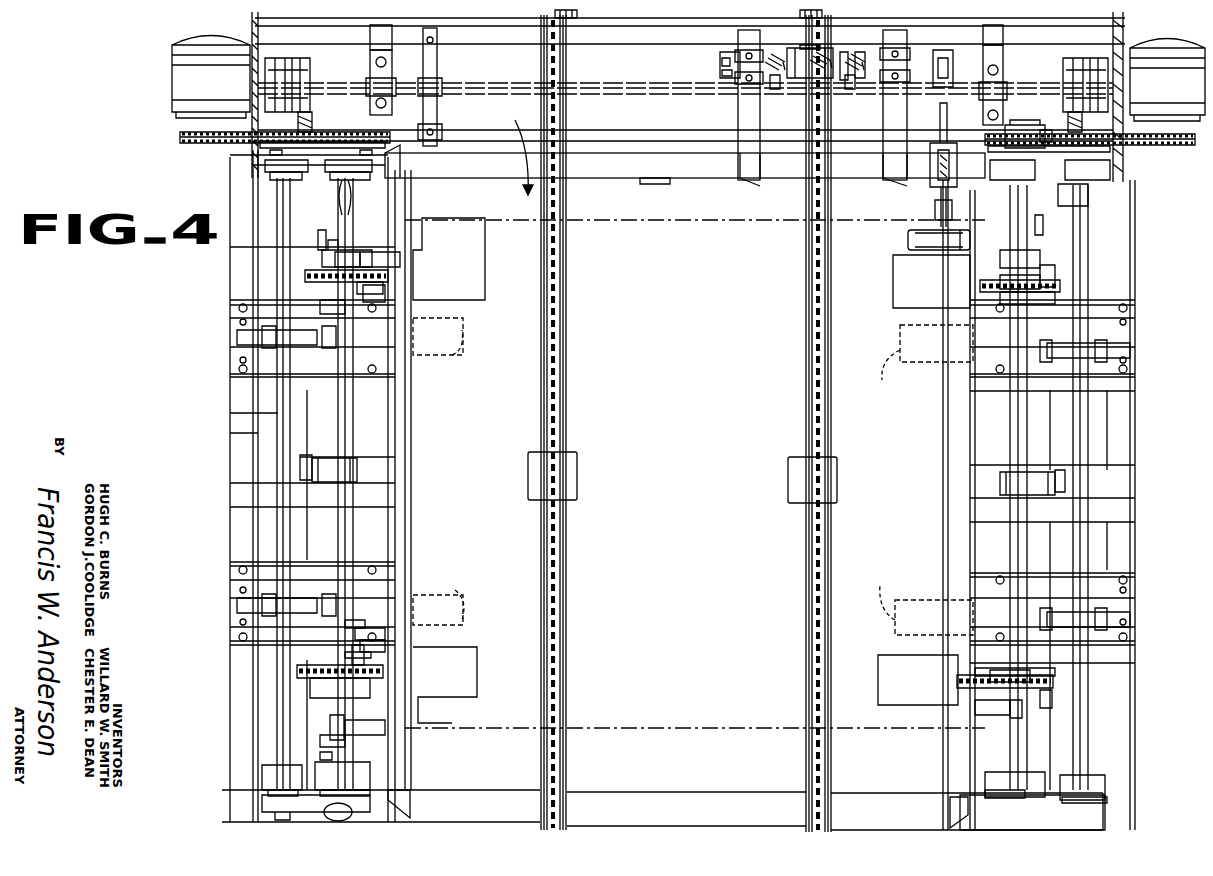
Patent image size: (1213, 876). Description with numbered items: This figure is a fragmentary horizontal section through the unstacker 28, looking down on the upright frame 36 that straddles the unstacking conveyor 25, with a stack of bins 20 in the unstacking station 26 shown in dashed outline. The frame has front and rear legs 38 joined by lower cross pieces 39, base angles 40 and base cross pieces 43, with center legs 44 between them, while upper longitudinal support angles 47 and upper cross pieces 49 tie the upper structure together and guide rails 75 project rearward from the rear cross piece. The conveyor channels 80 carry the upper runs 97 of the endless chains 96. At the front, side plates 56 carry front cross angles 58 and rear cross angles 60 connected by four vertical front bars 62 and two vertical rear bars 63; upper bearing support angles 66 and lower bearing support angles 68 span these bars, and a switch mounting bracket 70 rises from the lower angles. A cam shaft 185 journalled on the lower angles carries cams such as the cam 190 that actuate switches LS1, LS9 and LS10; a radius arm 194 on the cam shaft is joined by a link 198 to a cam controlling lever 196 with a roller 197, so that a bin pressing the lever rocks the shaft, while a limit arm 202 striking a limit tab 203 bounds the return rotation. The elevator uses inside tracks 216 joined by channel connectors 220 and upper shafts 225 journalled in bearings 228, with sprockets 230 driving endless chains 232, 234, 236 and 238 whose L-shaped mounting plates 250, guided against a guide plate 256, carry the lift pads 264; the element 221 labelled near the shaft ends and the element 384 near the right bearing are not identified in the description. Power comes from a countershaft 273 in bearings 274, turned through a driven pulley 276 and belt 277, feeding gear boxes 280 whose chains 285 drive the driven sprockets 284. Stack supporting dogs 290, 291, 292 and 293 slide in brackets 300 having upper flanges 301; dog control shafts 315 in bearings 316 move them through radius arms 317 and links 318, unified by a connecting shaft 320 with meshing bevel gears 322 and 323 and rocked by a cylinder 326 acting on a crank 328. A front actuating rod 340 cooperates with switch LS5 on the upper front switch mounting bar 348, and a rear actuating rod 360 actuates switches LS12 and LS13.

The bins 20 is at (758, 232).
The unstacking conveyor 25 is at (788, 520).
The unstacking station 26 is at (516, 146).
The unstacker 28 is at (228, 24).
The upright frame 36 is at (228, 522).
The front and rear legs 38 is at (268, 172).
The front and rear lower cross pieces 39 is at (665, 800).
The base angles 40 is at (411, 430).
The base cross pieces 43 is at (411, 448).
The center legs 44 is at (312, 462).
The upper longitudinal support angles 47 is at (240, 435).
The upper cross pieces 49 is at (230, 492).
The vertical side plates 56 is at (252, 68).
The front cross angles 58 is at (520, 45).
The rear cross angles 60 is at (655, 170).
The vertical front bars 62 is at (740, 32).
The vertical rear bars 63 is at (740, 178).
The upper horizontal bearing support angles 66 is at (372, 32).
The lower horizontal bearing support angles 68 is at (742, 166).
The vertical switch mounting bracket 70 is at (790, 70).
The longitudinal guide rails 75 is at (398, 790).
The channels 80 is at (567, 312).
The endless chains 96 is at (565, 350).
The upper runs 97 is at (565, 368).
The cam shaft 185 is at (722, 55).
The cam 190 is at (822, 48).
The radius arm 194 is at (945, 58).
The cam controlling lever 196 is at (935, 214).
The roller 197 is at (908, 240).
The link 198 is at (956, 145).
The limit arm 202 is at (730, 64).
The limit tab 203 is at (730, 73).
The inside vertical tracks 216 is at (395, 264).
The channel connectors 220 is at (392, 236).
The bearing 221 is at (342, 180).
The upper elevator shafts 225 is at (411, 505).
The bearings 228 is at (411, 471).
The sprockets 230 is at (320, 283).
The endless chain 232 is at (1058, 677).
The endless chain 234 is at (1062, 296).
The left front elevator chain 236 is at (303, 270).
The left rear elevator chain 238 is at (310, 688).
The L-shaped mounting plates 250 is at (395, 280).
The guide plate 256 is at (395, 252).
The lift pads 264 is at (490, 298).
The countershaft 273 is at (635, 128).
The bearings 274 is at (378, 62).
The driven pulley 276 is at (440, 52).
The endless belt 277 is at (445, 160).
The gear boxes 280 is at (180, 75).
The driven sprockets 284 is at (364, 196).
The chains 285 is at (195, 145).
The stack supporting dog 290 is at (975, 612).
The stack supporting dog 291 is at (975, 350).
The stack supporting dog 292 is at (395, 345).
The stack supporting dog 293 is at (395, 605).
The front and rear brackets 300 is at (240, 318).
The upper flanges 301 is at (243, 358).
The dog control shafts 315 is at (275, 413).
The bearings 316 is at (275, 178).
The radius arms 317 is at (240, 334).
The links 318 is at (262, 340).
The connecting shaft 320 is at (640, 138).
The bevel gears 322 is at (298, 118).
The bevel gears 323 is at (262, 150).
The cylinder 326 is at (324, 812).
The crank 328 is at (262, 797).
The front actuating rod 340 is at (395, 292).
The upper front switch mounting bar 348 is at (322, 250).
The rear actuating rod 360 is at (395, 650).
The bearing 384 is at (1040, 120).
The switch LS1 is at (855, 52).
The switch LS5 is at (320, 302).
The switch LS9 is at (850, 90).
The switch LS10 is at (775, 90).
The switch LS12 is at (395, 640).
The switch LS13 is at (345, 655).